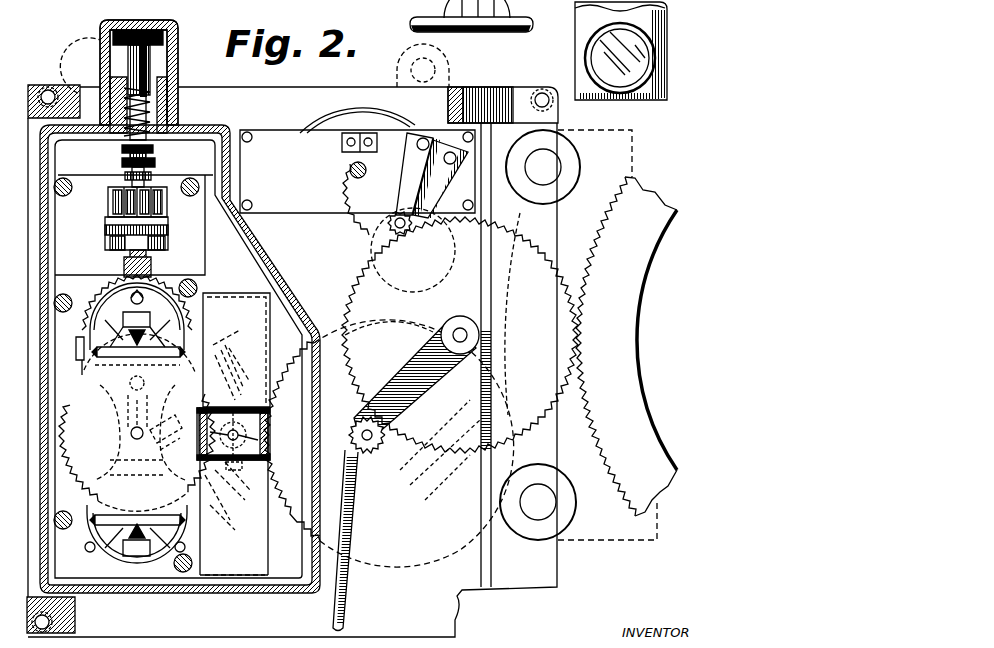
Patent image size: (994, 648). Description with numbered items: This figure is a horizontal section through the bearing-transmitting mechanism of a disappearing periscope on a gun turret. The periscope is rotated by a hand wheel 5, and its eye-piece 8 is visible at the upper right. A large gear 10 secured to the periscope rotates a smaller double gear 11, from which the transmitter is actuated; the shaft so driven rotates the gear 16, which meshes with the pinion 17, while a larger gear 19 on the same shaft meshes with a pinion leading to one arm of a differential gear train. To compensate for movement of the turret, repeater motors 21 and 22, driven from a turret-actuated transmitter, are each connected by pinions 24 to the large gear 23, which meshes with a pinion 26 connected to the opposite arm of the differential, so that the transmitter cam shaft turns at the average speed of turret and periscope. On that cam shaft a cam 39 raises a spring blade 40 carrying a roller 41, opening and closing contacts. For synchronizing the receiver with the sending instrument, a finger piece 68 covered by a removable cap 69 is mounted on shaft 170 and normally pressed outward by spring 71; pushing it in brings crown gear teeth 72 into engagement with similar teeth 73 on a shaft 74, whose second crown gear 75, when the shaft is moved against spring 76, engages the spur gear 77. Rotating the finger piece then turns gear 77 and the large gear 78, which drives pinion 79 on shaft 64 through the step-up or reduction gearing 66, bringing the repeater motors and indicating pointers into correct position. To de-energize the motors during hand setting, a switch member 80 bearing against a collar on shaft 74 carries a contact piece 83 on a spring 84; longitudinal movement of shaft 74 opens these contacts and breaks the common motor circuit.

The hand wheel 5 is at (520, 12).
The eye-piece 8 is at (621, 51).
The large gear 10 is at (626, 346).
The double gear 11 is at (571, 407).
The gear 16 is at (460, 335).
The pinion 17 is at (347, 450).
The larger gear 19 is at (277, 359).
The repeater motor 21 is at (107, 323).
The repeater motor 22 is at (95, 532).
The large gear 23 is at (136, 422).
The pinion 24 is at (130, 520).
The pinion 26 is at (234, 460).
The cam 39 is at (222, 434).
The spring blade 40 is at (235, 434).
The roller 41 is at (245, 438).
The shaft 64 is at (140, 438).
The step-up gearing 66 is at (140, 428).
The finger piece 68 is at (150, 60).
The removable cap 69 is at (178, 25).
The spring 71 is at (150, 105).
The crown gear teeth 72 is at (122, 150).
The crown gear teeth 73 is at (155, 163).
The shaft 74 is at (125, 176).
The second crown gear 75 is at (150, 265).
The spring 76 is at (144, 178).
The spur gear 77 is at (115, 292).
The large gear 78 is at (168, 285).
The pinion 79 is at (131, 436).
The switch member 80 is at (108, 195).
The contact piece 83 is at (105, 222).
The spring 84 is at (146, 212).
The shaft 170 is at (146, 95).